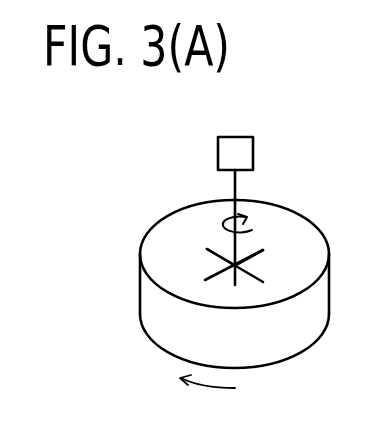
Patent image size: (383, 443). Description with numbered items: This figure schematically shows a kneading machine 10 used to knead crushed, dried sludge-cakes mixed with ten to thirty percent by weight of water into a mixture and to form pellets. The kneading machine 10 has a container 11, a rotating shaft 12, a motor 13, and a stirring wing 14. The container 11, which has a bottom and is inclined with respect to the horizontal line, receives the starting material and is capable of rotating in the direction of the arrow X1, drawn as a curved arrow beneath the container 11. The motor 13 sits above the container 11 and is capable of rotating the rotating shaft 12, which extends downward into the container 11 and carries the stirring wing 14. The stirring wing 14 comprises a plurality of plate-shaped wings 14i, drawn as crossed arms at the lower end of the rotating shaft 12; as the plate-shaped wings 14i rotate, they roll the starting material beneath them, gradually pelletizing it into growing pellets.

The kneading machine 10 is at (188, 297).
The container 11 is at (147, 335).
The rotating shaft 12 is at (238, 190).
The motor 13 is at (242, 152).
The stirring wing 14 is at (207, 251).
The plate-shaped wing 14i is at (253, 253).
The arrow indicating container rotation direction X1 is at (208, 400).